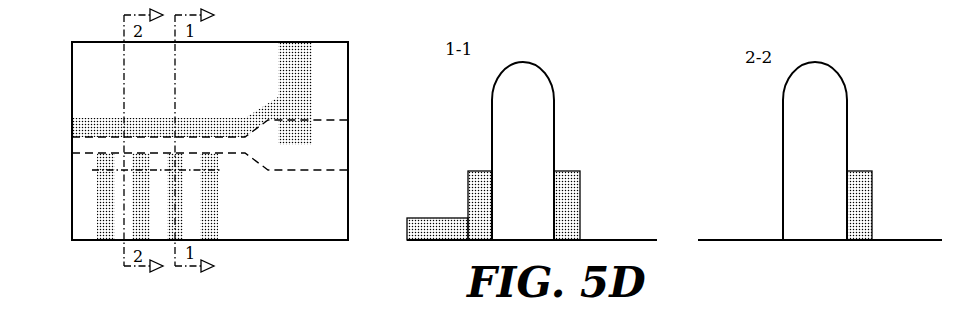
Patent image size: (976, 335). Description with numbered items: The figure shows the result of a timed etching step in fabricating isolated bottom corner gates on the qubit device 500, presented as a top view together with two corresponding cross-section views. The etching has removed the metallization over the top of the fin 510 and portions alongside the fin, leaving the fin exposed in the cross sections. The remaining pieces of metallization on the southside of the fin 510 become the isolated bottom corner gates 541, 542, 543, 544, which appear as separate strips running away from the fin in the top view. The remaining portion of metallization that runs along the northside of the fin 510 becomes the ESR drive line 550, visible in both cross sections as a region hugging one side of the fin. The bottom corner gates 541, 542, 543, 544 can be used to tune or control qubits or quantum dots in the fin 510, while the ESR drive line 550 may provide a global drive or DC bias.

The qubit device 500 is at (326, 228).
The fin 510 is at (831, 167).
The isolated bottom corner gate 541 is at (208, 162).
The isolated bottom corner gate 542 is at (177, 162).
The isolated bottom corner gate 543 is at (142, 162).
The isolated bottom corner gate 544 is at (105, 162).
The ESR drive line 550 is at (208, 128).